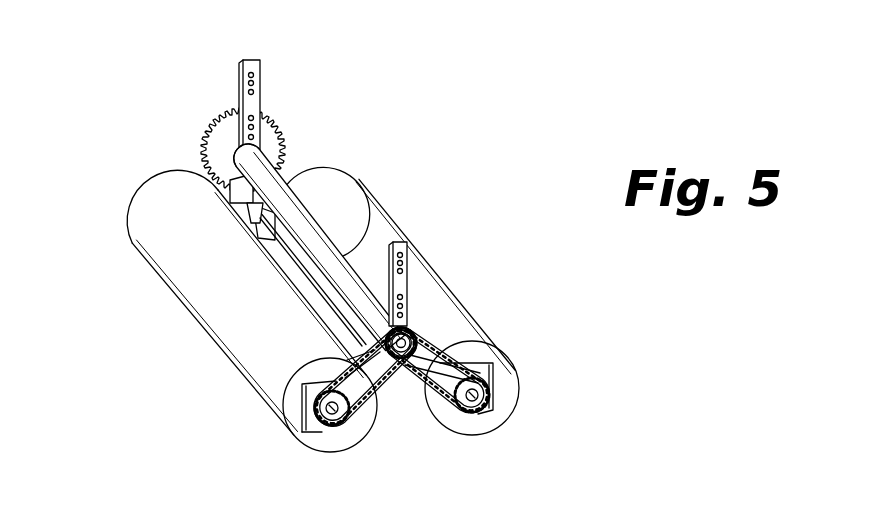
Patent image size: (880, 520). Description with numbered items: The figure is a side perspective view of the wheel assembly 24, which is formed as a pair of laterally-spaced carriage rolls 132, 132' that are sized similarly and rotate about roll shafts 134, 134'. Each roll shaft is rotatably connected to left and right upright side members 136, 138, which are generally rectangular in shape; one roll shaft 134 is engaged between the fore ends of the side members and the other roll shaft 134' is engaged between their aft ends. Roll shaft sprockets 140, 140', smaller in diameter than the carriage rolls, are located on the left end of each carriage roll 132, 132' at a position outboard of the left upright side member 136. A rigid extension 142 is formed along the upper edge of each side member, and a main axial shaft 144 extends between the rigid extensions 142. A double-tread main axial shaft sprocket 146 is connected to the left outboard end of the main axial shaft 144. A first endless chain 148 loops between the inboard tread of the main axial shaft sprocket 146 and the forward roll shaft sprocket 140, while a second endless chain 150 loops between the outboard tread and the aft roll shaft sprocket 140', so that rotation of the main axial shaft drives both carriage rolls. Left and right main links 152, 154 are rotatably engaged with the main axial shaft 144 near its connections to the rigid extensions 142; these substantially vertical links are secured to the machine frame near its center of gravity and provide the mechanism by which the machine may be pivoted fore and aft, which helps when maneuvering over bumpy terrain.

The wheel assembly 24 is at (503, 74).
The carriage roll 132 is at (217, 311).
The carriage roll 132' is at (403, 290).
The roll shaft 134 is at (266, 413).
The roll shaft 134' is at (506, 426).
The left upright side member 136 is at (433, 410).
The right upright side member 138 is at (240, 208).
The roll shaft sprocket 140 is at (268, 430).
The roll shaft sprocket 140' is at (510, 374).
The rigid extension 142 is at (277, 153).
The main axial shaft 144 is at (345, 257).
The main axial shaft sprocket 146 is at (412, 375).
The first endless chain 148 is at (340, 350).
The second endless chain 150 is at (437, 348).
The left main link 152 is at (408, 262).
The right main link 154 is at (260, 83).